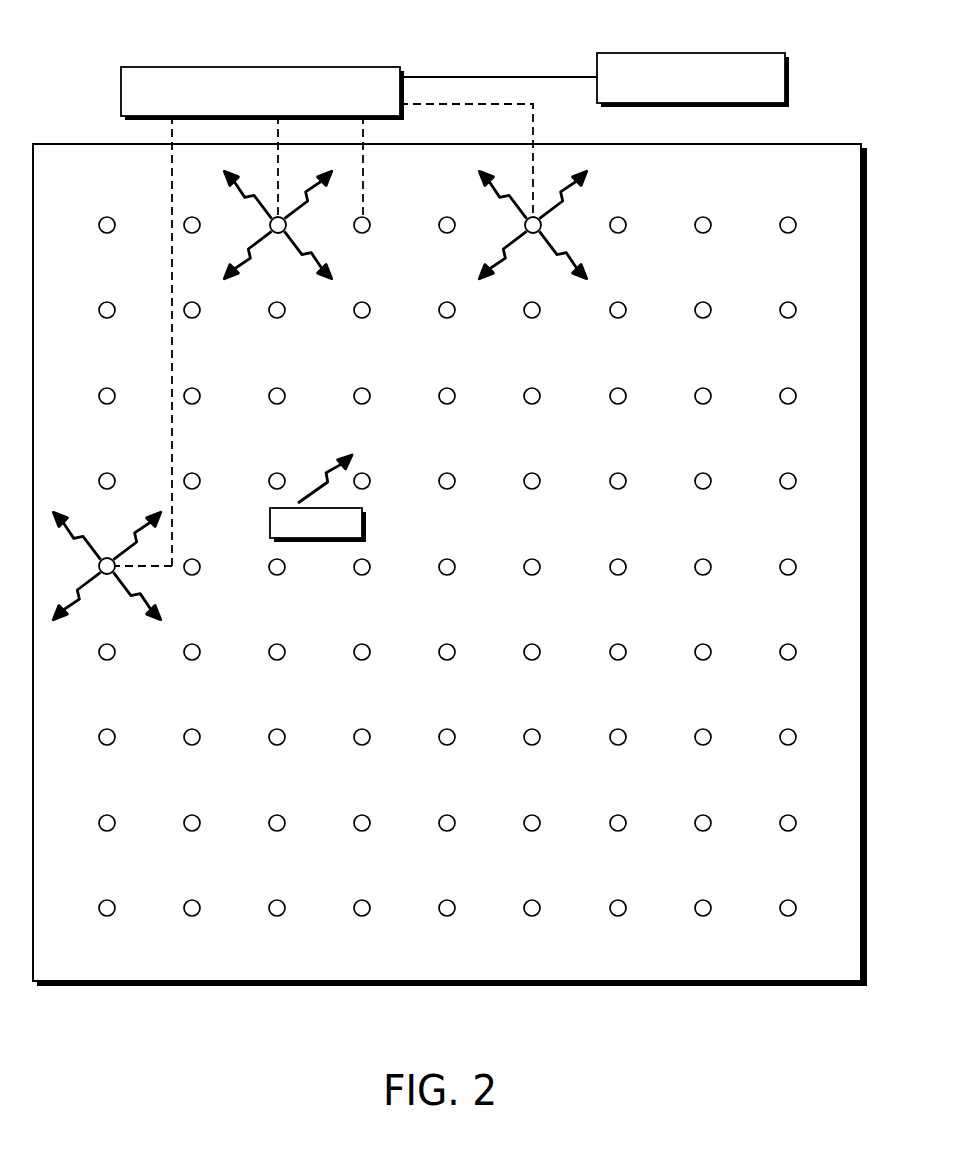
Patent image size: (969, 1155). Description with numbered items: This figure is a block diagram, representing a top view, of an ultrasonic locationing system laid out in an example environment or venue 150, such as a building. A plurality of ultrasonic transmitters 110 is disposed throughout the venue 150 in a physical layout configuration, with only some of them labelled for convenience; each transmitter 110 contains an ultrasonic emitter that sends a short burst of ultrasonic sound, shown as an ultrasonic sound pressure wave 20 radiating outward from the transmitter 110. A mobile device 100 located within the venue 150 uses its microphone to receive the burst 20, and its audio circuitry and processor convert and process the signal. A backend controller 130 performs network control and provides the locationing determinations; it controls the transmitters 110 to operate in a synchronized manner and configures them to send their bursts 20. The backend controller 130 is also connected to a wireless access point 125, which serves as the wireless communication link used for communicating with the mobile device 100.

The environment (venue) 150 is at (561, 23).
The backend controller 130 is at (121, 92).
The wireless access point 125 is at (786, 77).
The ultrasonic transmitter 110 is at (270, 225).
The ultrasonic sound pressure wave 20 is at (300, 252).
The mobile device 100 is at (270, 522).